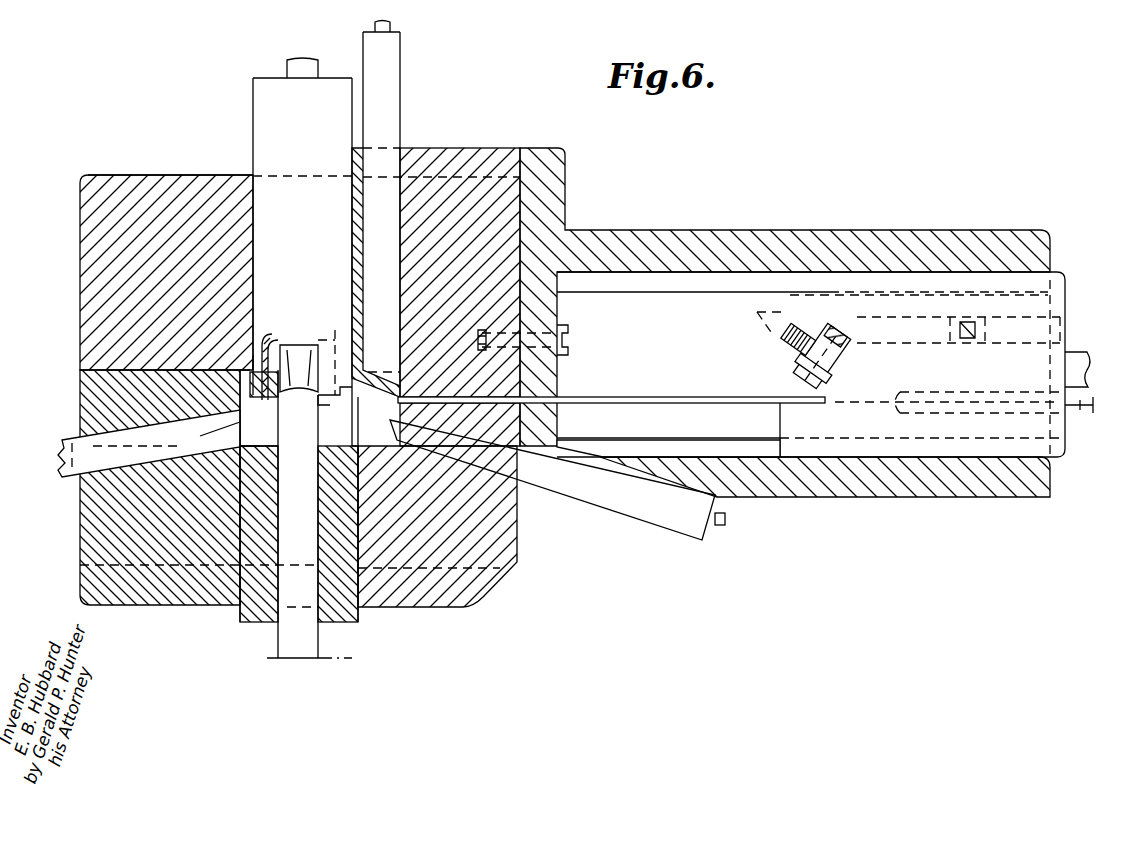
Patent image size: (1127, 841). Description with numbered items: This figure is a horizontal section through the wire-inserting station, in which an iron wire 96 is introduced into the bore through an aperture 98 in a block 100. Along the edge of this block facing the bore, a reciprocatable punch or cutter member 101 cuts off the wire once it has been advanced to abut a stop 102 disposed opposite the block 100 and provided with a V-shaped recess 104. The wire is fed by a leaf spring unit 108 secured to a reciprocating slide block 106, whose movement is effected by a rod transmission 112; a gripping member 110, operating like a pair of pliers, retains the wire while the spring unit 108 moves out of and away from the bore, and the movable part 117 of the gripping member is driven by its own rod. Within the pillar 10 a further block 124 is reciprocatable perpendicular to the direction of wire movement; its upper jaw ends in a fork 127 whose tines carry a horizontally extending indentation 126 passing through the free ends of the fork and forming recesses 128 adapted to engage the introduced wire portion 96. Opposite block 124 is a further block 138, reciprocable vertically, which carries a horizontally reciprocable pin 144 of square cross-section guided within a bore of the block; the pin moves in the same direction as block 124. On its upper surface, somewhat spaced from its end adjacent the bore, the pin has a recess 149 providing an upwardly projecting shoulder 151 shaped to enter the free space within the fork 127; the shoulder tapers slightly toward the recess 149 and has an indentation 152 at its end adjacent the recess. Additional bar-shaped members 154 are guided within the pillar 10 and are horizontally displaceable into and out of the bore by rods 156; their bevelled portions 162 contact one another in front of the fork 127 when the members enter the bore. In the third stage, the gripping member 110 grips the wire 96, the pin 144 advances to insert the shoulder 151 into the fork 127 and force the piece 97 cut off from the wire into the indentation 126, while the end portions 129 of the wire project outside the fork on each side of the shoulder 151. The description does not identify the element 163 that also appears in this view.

The pillar 10 is at (170, 183).
The iron wire 96 is at (605, 397).
The piece cut off from the wire 97 is at (268, 418).
The aperture 98 is at (520, 245).
The block 100 is at (410, 358).
The punch or cutter member 101 is at (395, 72).
The stop 102 is at (80, 408).
The V-shaped recess 104 is at (80, 352).
The reciprocating slide block 106 is at (1065, 283).
The leaf spring unit 108 is at (868, 342).
The gripping member 110 is at (557, 318).
The rod transmission 112 is at (1076, 350).
The movable part of the gripping member 117 is at (543, 440).
The block 124 is at (260, 105).
The indentation 126 is at (277, 340).
The fork 127 is at (252, 358).
The recesses 128 is at (352, 312).
The end portions of the wire 129 is at (325, 410).
The block 138 is at (253, 620).
The pin 144 is at (330, 657).
The recess 149 is at (240, 446).
The shoulder 151 is at (293, 345).
The indentation 152 is at (308, 345).
The bar shaped members 154 is at (70, 480).
The rods 156 is at (722, 526).
The bevelled portions 162 is at (222, 422).
The arm 163 is at (392, 432).